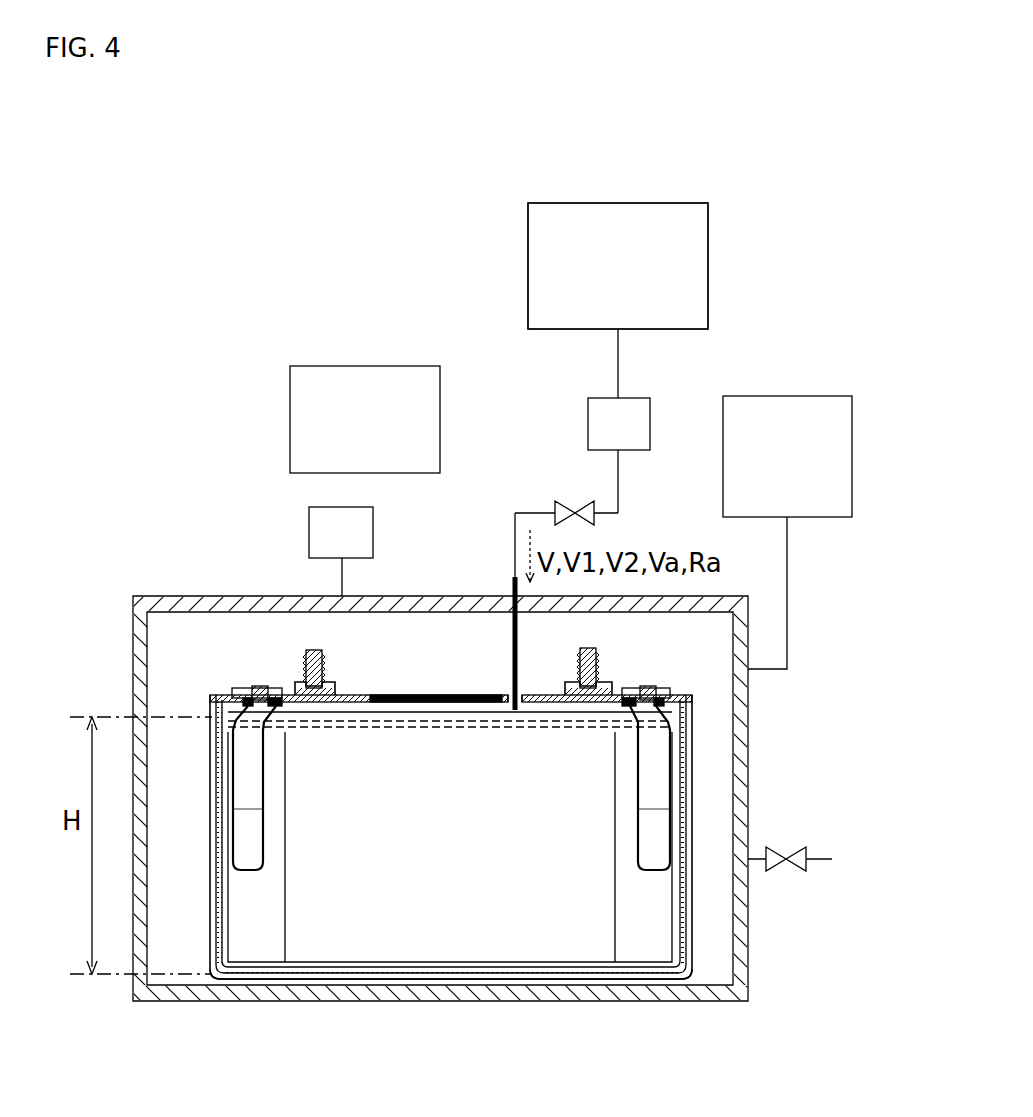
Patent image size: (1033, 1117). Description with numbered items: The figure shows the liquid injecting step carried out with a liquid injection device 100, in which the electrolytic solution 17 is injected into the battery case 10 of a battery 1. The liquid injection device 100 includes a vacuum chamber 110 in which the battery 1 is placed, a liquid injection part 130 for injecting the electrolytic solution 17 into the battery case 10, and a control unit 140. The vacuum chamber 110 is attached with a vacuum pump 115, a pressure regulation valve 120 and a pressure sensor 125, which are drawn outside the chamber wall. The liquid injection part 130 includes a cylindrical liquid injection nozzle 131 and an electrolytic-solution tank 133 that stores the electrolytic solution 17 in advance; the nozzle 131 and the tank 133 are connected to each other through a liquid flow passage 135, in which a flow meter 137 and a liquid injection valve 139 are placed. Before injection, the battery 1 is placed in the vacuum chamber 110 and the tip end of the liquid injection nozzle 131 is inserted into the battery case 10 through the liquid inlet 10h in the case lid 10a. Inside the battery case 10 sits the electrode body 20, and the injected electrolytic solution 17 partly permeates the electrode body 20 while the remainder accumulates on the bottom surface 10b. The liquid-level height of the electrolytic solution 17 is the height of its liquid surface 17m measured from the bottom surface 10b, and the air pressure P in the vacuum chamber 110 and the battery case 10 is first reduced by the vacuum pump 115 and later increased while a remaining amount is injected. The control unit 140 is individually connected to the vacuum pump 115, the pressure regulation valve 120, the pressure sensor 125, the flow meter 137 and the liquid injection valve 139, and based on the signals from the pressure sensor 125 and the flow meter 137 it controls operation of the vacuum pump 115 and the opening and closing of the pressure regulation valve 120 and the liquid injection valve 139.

The liquid injection device 100 is at (366, 258).
The vacuum chamber 110 is at (140, 648).
The liquid injection part 130 is at (526, 242).
The electrolytic-solution tank 133 is at (687, 254).
The liquid flow passage 135 is at (616, 358).
The flow meter 137 is at (598, 424).
The liquid injection valve 139 is at (568, 504).
The vacuum pump 115 is at (790, 412).
The control unit 140 is at (356, 388).
The pressure sensor 125 is at (312, 528).
The liquid injection nozzle 131 is at (505, 630).
The pressure regulation valve 120 is at (793, 852).
The battery case 10 is at (690, 772).
The lid of battery case 10a is at (546, 712).
The bottom surface 10b is at (268, 950).
The liquid inlet 10h is at (510, 697).
The battery 1 is at (530, 935).
The electrode body 20 is at (384, 935).
The electrolytic solution 17 is at (285, 715).
The liquid surface 17m is at (366, 720).
The air pressure P is at (690, 714).